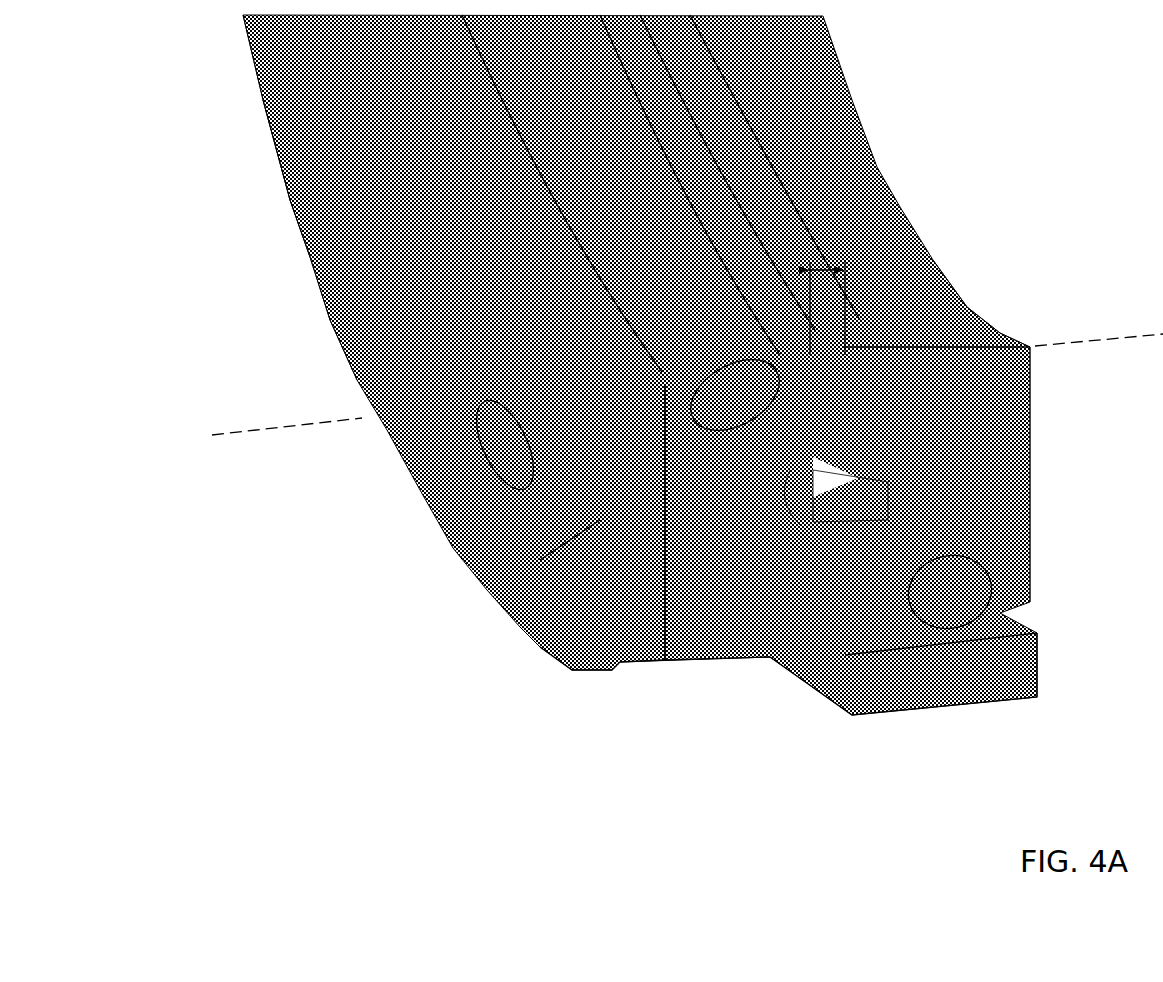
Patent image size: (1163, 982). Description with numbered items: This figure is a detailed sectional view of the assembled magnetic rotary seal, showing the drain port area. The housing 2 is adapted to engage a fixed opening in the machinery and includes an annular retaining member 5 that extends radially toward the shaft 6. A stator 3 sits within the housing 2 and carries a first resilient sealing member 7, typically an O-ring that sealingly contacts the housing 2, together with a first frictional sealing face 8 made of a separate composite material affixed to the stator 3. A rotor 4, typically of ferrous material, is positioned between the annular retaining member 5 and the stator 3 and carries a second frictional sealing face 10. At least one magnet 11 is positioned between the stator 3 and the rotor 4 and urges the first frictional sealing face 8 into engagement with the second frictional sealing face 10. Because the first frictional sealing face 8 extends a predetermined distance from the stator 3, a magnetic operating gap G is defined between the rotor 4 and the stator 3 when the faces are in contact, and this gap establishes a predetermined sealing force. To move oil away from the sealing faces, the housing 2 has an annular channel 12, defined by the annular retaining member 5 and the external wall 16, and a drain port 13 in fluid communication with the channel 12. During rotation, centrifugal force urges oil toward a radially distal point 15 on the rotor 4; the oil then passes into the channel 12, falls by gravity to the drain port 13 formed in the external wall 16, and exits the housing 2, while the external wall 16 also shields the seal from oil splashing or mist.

The housing 2 is at (256, 134).
The external wall 16 is at (362, 218).
The shaft 6 is at (232, 438).
The annular channel 12 is at (505, 468).
The drain port 13 is at (557, 553).
The annular retaining member 5 is at (653, 482).
The radially distal point 15 is at (686, 563).
The rotor 4 is at (773, 537).
The first resilient sealing member 7 is at (943, 593).
The first frictional sealing face 8 is at (817, 520).
The second frictional sealing face 10 is at (817, 517).
The stator 3 is at (973, 320).
The magnetic operating gap G is at (826, 262).
The magnet 11 is at (720, 273).